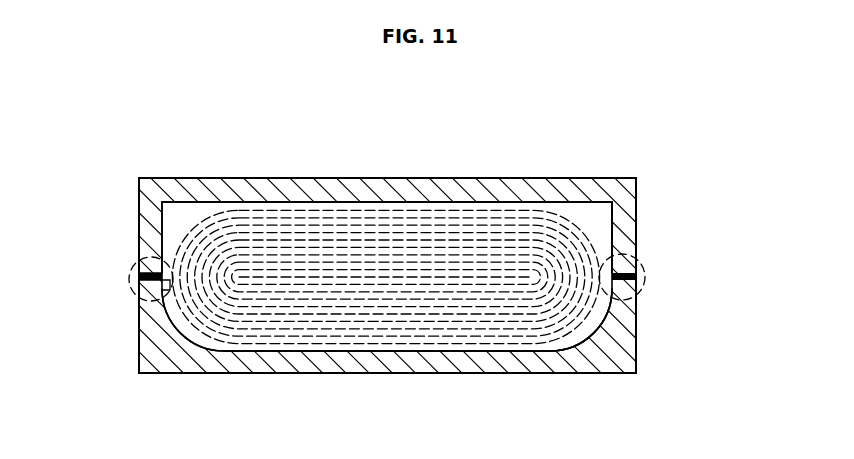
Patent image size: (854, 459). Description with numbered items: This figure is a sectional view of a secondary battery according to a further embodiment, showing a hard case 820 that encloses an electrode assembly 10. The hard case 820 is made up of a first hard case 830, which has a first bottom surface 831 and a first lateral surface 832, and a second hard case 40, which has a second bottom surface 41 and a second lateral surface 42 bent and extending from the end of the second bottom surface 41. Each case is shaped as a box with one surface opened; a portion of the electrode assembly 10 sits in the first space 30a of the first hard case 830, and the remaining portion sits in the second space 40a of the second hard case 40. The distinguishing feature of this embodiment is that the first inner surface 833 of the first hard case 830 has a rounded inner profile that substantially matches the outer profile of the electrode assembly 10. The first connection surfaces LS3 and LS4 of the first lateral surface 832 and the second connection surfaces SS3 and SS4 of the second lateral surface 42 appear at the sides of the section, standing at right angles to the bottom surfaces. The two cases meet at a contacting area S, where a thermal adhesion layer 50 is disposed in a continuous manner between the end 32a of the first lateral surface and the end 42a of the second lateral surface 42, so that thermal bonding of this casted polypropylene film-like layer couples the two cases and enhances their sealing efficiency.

The electrode assembly 10 is at (333, 213).
The second hard case 40 is at (643, 232).
The second space 40a is at (189, 219).
The second bottom surface 41 is at (452, 186).
The second lateral surface 42 is at (624, 212).
The end of second lateral surface 42a is at (140, 276).
The end of first lateral surface 32a is at (140, 288).
The thermal adhesion layer 50 is at (636, 277).
The contacting area S is at (128, 287).
The hard case 820 is at (745, 227).
The first hard case 830 is at (641, 331).
The first bottom surface 831 is at (298, 362).
The first lateral surface 832 is at (636, 360).
The first inner surface 833 is at (483, 343).
The first space 30a is at (568, 346).
The second connection surface SS4 is at (139, 208).
The second connection surface SS3 is at (636, 197).
The first connection surface LS4 is at (139, 343).
The first connection surface LS3 is at (636, 343).